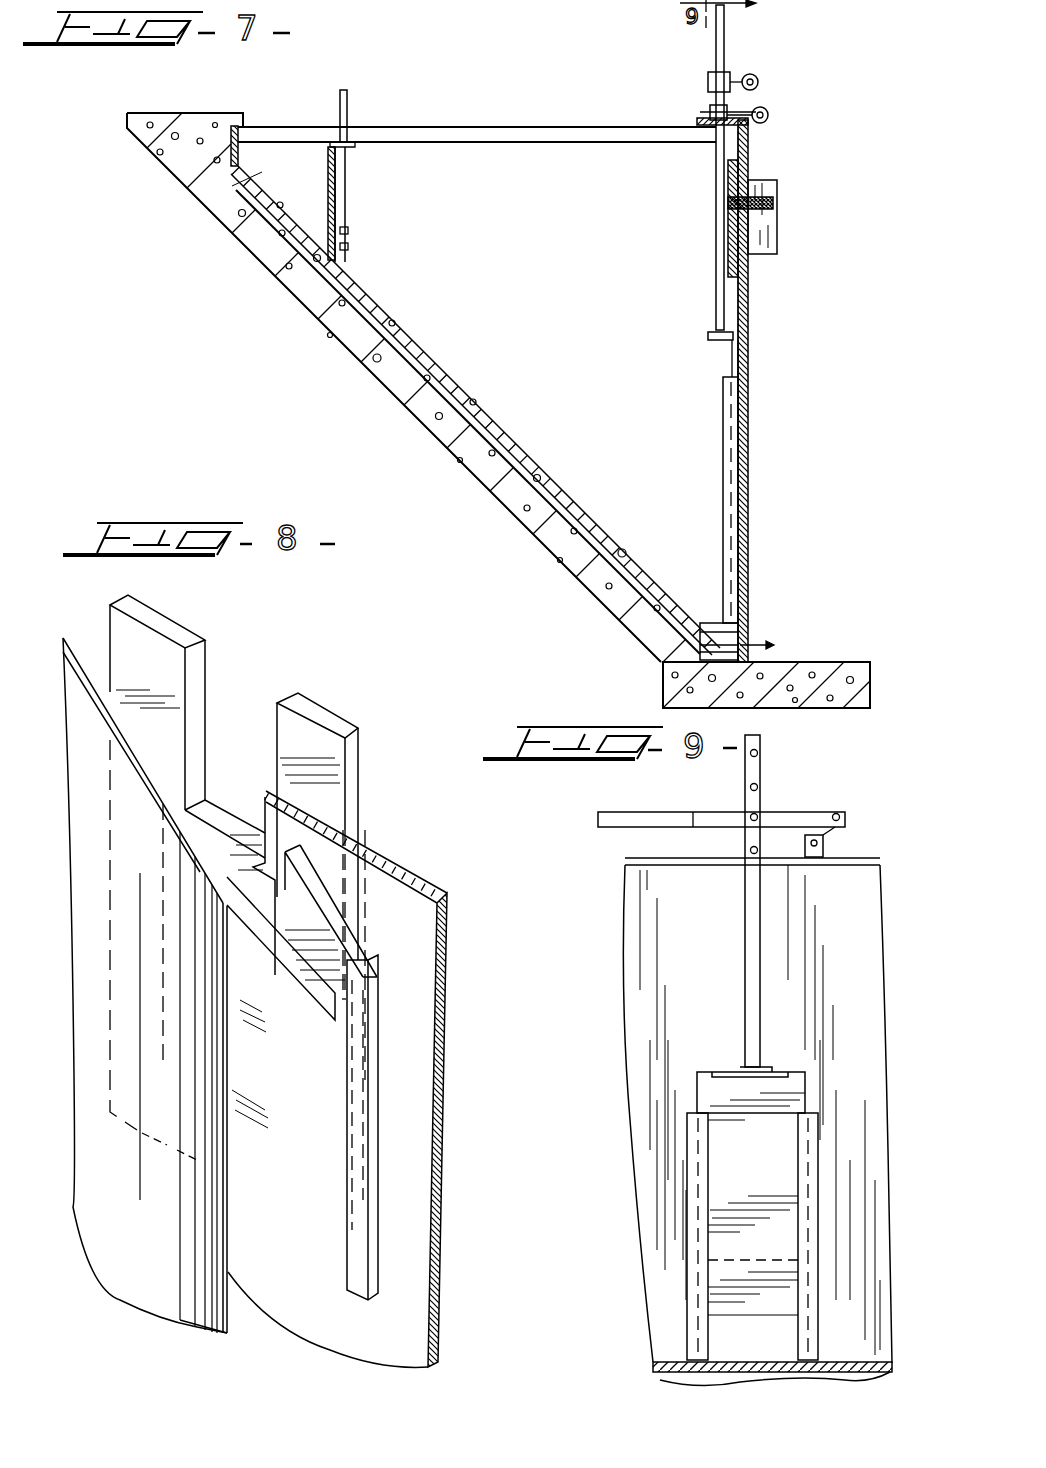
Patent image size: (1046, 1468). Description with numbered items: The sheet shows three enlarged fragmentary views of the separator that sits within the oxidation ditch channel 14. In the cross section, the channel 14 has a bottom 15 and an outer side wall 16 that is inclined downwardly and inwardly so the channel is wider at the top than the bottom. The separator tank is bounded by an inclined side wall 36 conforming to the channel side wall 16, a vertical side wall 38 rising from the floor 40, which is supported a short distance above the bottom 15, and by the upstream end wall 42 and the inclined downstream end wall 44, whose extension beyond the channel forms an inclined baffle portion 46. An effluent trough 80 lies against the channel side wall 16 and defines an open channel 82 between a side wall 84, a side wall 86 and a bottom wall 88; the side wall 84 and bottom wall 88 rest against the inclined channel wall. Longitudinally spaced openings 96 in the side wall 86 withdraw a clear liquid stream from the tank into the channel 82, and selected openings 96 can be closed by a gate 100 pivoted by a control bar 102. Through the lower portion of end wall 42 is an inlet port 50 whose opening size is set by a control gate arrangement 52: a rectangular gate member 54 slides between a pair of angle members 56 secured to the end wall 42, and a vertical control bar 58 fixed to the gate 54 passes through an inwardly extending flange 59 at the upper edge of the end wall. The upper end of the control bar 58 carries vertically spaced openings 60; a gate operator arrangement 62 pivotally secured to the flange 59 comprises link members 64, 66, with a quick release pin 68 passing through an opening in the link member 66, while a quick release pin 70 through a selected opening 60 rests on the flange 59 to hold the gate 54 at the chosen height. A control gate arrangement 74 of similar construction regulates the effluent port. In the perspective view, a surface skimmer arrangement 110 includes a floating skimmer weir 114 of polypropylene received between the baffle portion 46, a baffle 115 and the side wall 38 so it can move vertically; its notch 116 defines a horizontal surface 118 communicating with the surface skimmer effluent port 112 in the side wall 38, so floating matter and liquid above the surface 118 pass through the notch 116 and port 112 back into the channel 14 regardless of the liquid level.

In FIG. 7, the channel 14 is at (795, 486).
In FIG. 7, the bottom 15 is at (828, 702).
In FIG. 7, the side wall 16 is at (398, 391).
In FIG. 7, the side wall 36 is at (485, 422).
In FIG. 7, the side wall 38 is at (748, 322).
In FIG. 8, the side wall 38 is at (418, 998).
In FIG. 7, the floor 40 is at (715, 640).
In FIG. 7, the upstream end wall 42 is at (746, 368).
In FIG. 9, the upstream end wall 42 is at (872, 1022).
In FIG. 8, the downstream end wall 44 is at (92, 882).
In FIG. 8, the baffle portion 46 is at (170, 1273).
In FIG. 9, the inlet port 50 is at (735, 1340).
In FIG. 9, the control gate arrangement 52 is at (810, 1100).
In FIG. 7, the gate member 54 is at (735, 348).
In FIG. 7, the angle members 56 is at (728, 440).
In FIG. 9, the angle members 56 is at (698, 1253).
In FIG. 7, the control bar 58 is at (722, 152).
In FIG. 9, the control bar 58 is at (754, 988).
In FIG. 7, the flange 59 is at (712, 128).
In FIG. 9, the flange 59 is at (866, 860).
In FIG. 9, the openings 60 is at (750, 787).
In FIG. 7, the gate operator arrangement 62 is at (698, 90).
In FIG. 9, the gate operator arrangement 62 is at (852, 813).
In FIG. 9, the link member 64 is at (828, 840).
In FIG. 9, the link member 66 is at (800, 822).
In FIG. 7, the quick release pin 68 is at (760, 78).
In FIG. 9, the quick release pin 68 is at (758, 812).
In FIG. 7, the quick release pin 70 is at (768, 108).
In FIG. 9, the quick release pin 70 is at (750, 850).
In FIG. 7, the control gate arrangement 74 is at (742, 412).
In FIG. 7, the effluent trough 80 is at (274, 137).
In FIG. 7, the channel 82 is at (300, 182).
In FIG. 7, the side wall 84 is at (228, 150).
In FIG. 7, the side wall 86 is at (336, 200).
In FIG. 7, the bottom wall 88 is at (250, 193).
In FIG. 7, the openings 96 is at (348, 246).
In FIG. 7, the gate 100 is at (348, 230).
In FIG. 7, the control bar 102 is at (348, 108).
In FIG. 8, the surface skimmer arrangement 110 is at (408, 851).
In FIG. 7, the surface skimmer effluent port 112 is at (732, 180).
In FIG. 8, the surface skimmer effluent port 112 is at (250, 1120).
In FIG. 8, the floating skimmer weir 114 is at (340, 760).
In FIG. 7, the baffle 115 is at (772, 241).
In FIG. 8, the baffle 115 is at (352, 1228).
In FIG. 7, the notch 116 is at (758, 204).
In FIG. 8, the notch 116 is at (197, 703).
In FIG. 8, the horizontal surface 118 is at (213, 812).